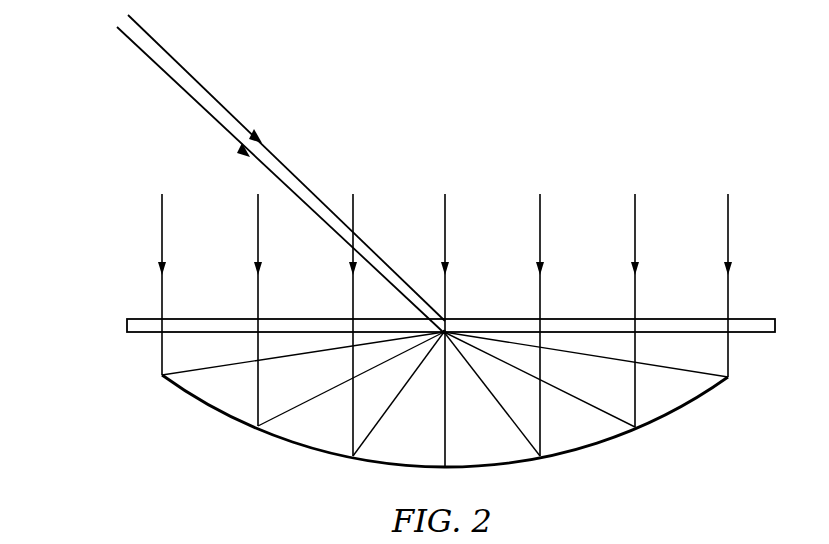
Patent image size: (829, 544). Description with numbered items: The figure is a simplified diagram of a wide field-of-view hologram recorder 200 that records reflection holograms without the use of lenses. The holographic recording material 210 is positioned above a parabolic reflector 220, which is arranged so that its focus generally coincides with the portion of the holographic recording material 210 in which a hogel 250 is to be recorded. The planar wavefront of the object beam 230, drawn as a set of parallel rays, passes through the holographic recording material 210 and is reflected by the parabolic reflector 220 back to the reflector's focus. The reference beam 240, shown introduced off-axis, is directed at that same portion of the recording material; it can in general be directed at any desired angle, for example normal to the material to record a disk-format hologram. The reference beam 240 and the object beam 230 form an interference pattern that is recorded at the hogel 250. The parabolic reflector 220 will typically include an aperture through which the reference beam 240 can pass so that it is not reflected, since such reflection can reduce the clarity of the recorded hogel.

The recorder 200 is at (614, 121).
The holographic recording material 210 is at (127, 321).
The parabolic reflector 220 is at (296, 442).
The object beam 230 is at (729, 222).
The reference beam 240 is at (181, 63).
The hogel 250 is at (462, 304).